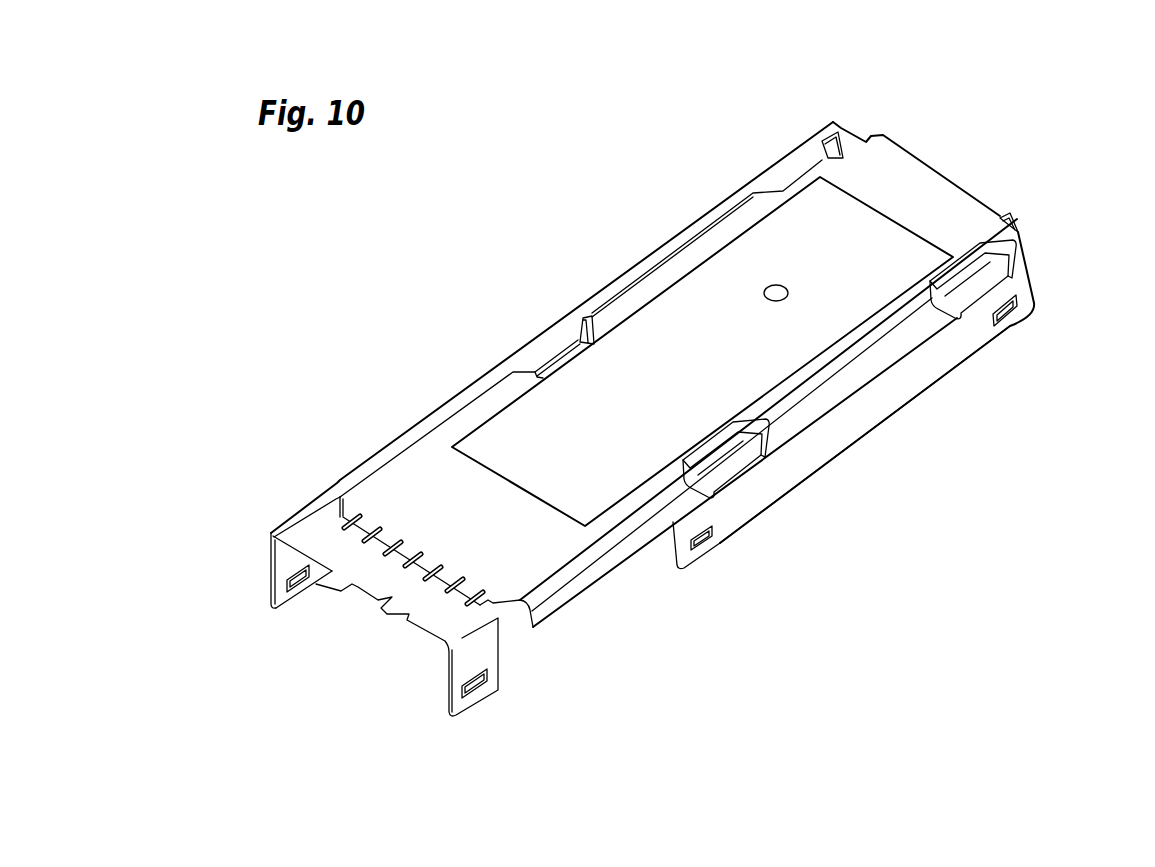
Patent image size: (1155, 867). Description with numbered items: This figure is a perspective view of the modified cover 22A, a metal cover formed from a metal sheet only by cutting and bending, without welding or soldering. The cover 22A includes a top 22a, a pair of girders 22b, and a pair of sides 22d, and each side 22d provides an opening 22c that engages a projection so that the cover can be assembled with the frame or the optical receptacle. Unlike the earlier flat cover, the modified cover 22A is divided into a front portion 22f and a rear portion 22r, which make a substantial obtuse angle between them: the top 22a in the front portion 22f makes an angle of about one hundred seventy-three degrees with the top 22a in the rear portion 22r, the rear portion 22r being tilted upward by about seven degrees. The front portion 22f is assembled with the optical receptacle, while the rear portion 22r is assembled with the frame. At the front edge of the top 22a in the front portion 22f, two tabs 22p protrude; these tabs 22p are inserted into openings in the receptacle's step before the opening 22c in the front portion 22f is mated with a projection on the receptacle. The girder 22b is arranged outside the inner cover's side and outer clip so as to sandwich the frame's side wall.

The modified cover 22A is at (983, 114).
The top 22a is at (870, 222).
The girder 22b is at (583, 578).
The opening 22c is at (298, 592).
The side 22d is at (883, 405).
The front portion 22f is at (300, 495).
The tab 22p is at (322, 586).
The rear portion 22r is at (583, 294).